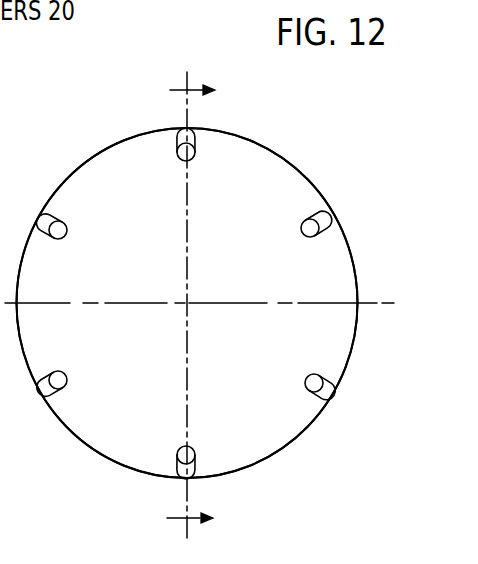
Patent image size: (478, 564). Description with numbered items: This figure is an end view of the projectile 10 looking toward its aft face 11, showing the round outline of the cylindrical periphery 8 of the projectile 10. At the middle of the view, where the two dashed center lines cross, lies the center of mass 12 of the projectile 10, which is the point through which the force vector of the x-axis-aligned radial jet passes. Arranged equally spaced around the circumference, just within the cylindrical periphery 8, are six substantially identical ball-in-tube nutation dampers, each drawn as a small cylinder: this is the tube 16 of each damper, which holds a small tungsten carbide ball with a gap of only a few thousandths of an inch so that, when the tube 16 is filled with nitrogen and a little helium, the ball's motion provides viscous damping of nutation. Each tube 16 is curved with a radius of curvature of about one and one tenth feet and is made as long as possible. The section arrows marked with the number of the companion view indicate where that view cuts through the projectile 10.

The cylindrical periphery 8 is at (311, 183).
The projectile 10 is at (286, 161).
The aft face 11 is at (290, 466).
The center of mass 12 is at (187, 302).
The tube 16 is at (176, 150).